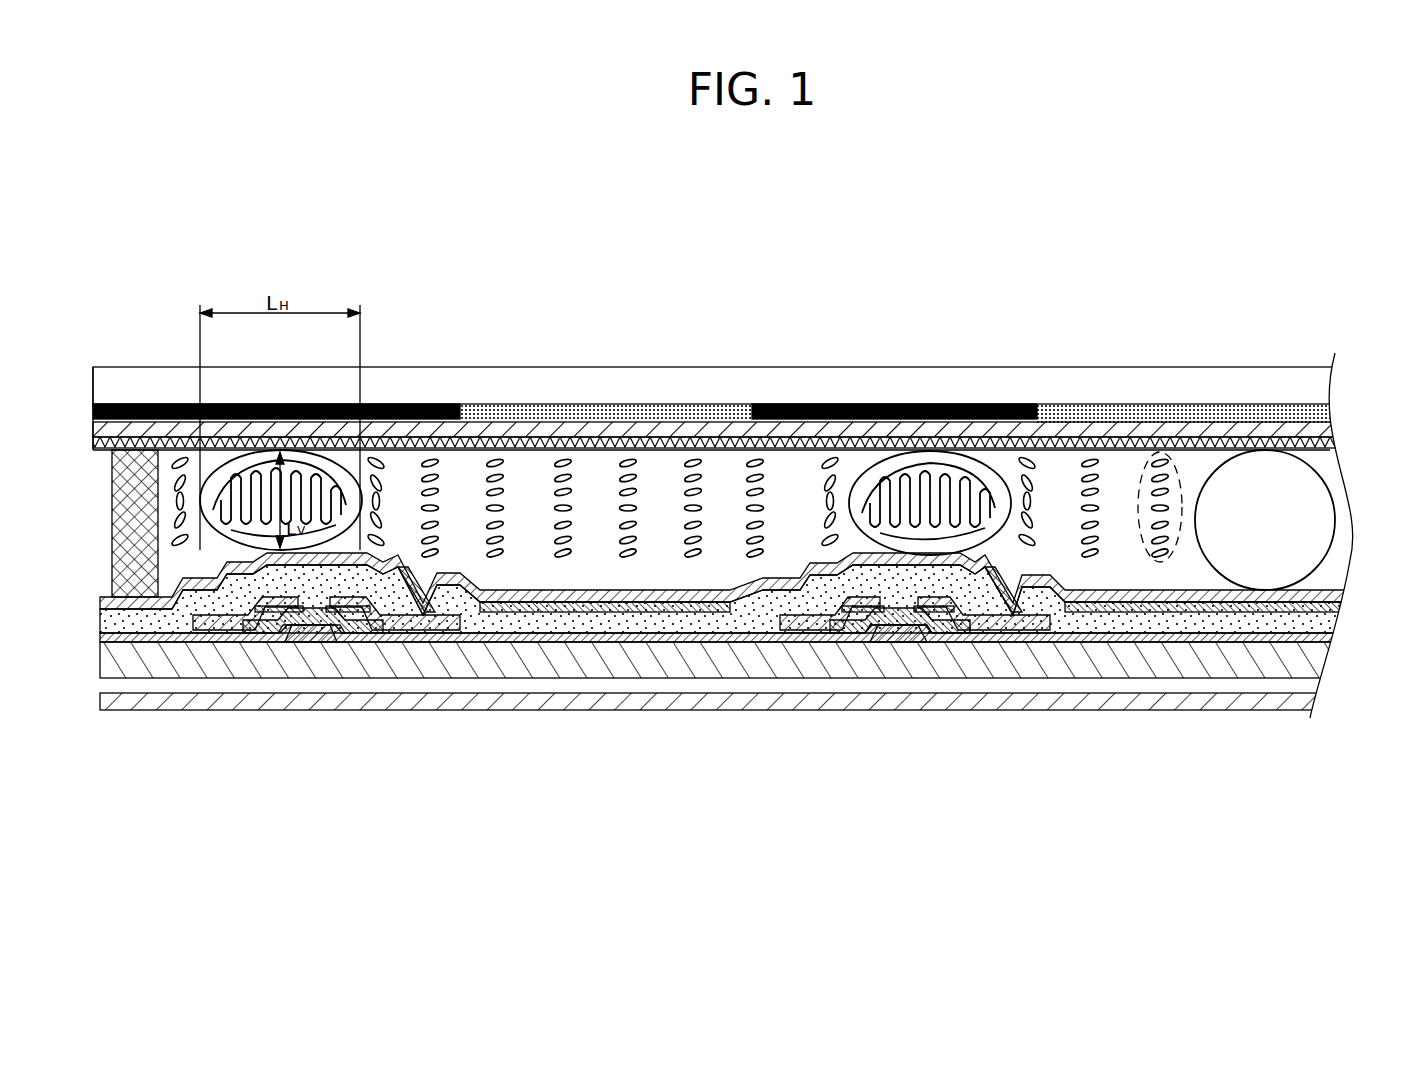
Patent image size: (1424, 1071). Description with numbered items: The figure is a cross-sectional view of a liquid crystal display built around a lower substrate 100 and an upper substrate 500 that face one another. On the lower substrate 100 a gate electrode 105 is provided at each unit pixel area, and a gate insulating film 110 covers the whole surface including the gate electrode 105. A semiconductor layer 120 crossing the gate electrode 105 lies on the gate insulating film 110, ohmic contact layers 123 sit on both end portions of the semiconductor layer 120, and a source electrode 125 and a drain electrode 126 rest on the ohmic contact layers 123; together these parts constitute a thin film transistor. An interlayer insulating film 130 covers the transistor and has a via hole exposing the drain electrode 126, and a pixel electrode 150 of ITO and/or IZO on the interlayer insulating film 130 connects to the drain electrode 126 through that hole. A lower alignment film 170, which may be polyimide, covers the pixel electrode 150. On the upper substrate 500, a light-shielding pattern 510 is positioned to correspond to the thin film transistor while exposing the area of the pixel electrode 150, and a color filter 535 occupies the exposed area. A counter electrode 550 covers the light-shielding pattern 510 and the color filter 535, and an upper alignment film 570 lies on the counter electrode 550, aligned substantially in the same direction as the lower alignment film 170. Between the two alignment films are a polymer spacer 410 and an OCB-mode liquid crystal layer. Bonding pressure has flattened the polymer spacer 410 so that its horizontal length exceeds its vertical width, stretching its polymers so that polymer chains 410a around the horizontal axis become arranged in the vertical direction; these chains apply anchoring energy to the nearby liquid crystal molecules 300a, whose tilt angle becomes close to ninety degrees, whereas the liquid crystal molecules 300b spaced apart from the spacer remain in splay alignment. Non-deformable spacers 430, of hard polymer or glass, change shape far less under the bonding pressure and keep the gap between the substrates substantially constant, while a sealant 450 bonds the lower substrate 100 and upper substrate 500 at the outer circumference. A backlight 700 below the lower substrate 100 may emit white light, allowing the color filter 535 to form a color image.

The lower substrate 100 is at (1330, 655).
The gate electrode 105 is at (910, 637).
The gate insulating film 110 is at (1340, 637).
The semiconductor layer 120 is at (858, 618).
The ohmic contact layers 123 is at (845, 620).
The source electrode 125 is at (803, 620).
The drain electrode 126 is at (1030, 620).
The interlayer insulating film 130 is at (1330, 622).
The pixel electrode 150 is at (1345, 603).
The lower alignment film 170 is at (1320, 592).
The liquid crystal molecules 300a is at (1043, 463).
The liquid crystal molecules 300b is at (1182, 452).
The polymer spacer 410 is at (857, 480).
The polymer chains 410a is at (807, 403).
The non-deformable spacers 430 is at (1268, 477).
The sealant 450 is at (141, 404).
The upper substrate 500 is at (1312, 386).
The light-shielding pattern 510 is at (917, 403).
The color filter 535 is at (1100, 420).
The counter electrode 550 is at (1312, 432).
The upper alignment film 570 is at (1325, 445).
The backlight 700 is at (1300, 702).